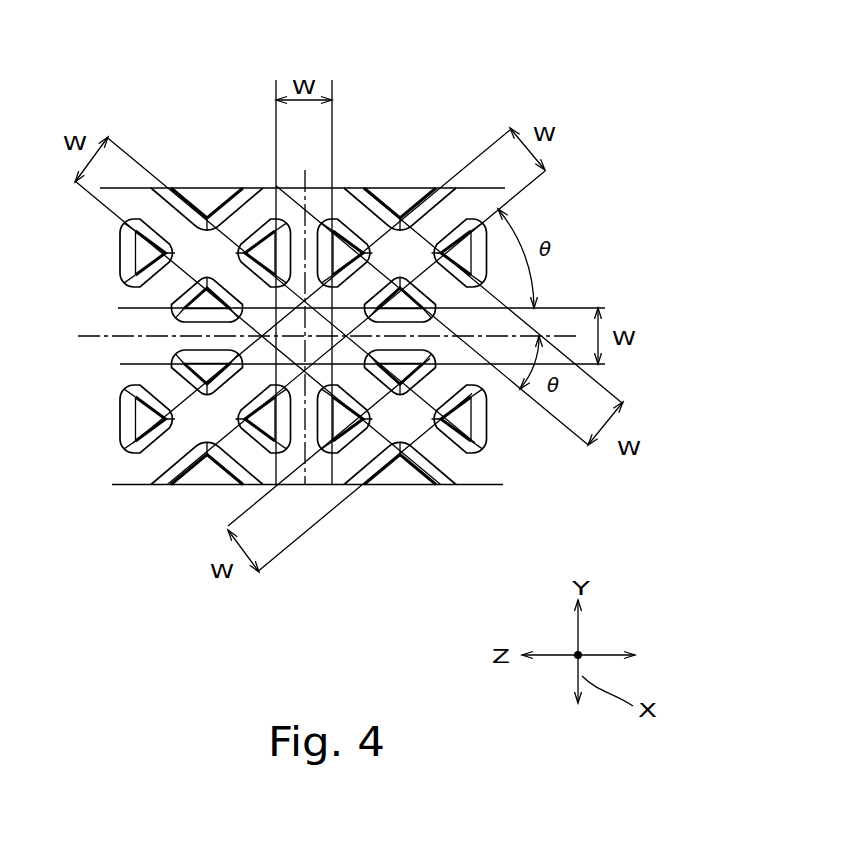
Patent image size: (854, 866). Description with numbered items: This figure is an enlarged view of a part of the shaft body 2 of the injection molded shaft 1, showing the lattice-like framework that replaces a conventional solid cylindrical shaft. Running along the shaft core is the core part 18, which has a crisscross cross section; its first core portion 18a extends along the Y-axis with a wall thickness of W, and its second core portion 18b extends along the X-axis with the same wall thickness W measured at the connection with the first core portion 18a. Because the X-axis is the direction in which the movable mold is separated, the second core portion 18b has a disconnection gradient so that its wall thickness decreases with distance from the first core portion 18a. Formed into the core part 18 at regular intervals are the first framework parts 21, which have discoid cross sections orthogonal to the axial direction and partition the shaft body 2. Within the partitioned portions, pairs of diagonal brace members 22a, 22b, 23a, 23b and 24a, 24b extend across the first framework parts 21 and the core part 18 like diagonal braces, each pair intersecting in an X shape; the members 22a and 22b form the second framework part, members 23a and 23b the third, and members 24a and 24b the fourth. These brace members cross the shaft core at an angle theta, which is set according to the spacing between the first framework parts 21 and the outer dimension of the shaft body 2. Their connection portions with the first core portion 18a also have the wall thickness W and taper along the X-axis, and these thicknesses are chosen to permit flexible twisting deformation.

The injection molded shaft 1 is at (326, 248).
The shaft body 2 is at (185, 189).
The core part 18 is at (306, 315).
The first core portion 18a is at (207, 183).
The second core portion 18b is at (399, 455).
The first framework part 21 is at (307, 247).
The diagonal brace member 22a is at (441, 324).
The diagonal brace member 22b is at (357, 307).
The diagonal brace member 23a is at (360, 217).
The diagonal brace member 23b is at (438, 220).
The diagonal brace member 24a is at (441, 324).
The diagonal brace member 24b is at (357, 307).